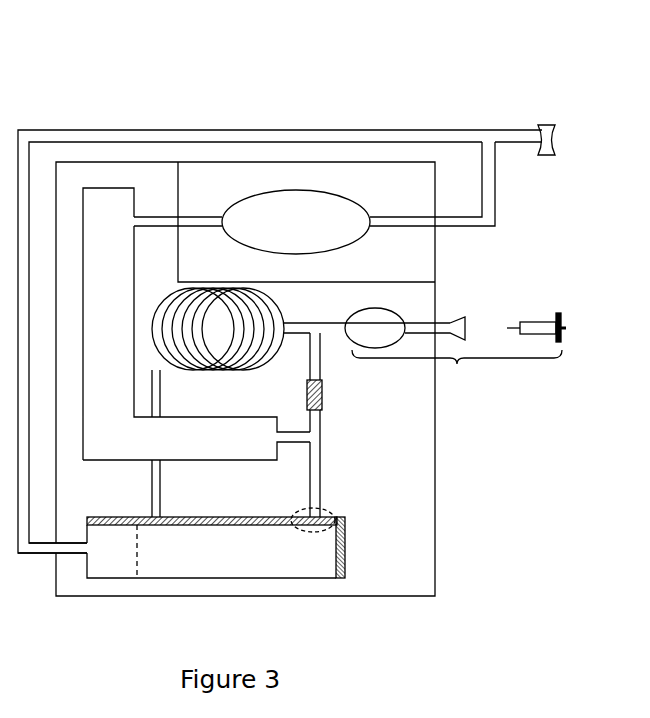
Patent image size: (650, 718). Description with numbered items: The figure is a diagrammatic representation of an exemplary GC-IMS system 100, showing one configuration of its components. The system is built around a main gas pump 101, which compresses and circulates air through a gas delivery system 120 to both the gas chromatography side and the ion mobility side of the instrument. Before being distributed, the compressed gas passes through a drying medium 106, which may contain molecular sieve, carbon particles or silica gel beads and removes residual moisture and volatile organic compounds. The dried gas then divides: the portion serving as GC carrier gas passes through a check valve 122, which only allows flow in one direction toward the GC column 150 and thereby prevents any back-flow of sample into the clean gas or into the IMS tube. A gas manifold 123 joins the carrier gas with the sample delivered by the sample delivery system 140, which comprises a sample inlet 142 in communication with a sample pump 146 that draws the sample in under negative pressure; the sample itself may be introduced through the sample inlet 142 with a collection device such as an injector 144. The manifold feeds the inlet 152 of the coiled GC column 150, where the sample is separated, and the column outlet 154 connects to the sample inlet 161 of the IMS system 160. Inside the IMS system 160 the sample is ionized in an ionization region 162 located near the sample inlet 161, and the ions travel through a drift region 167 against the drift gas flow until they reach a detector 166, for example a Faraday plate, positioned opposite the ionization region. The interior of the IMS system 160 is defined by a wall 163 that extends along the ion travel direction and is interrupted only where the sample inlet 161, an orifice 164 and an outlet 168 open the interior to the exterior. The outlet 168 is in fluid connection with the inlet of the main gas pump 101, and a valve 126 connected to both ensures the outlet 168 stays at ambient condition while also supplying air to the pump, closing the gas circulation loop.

The GC-IMS system 100 is at (580, 58).
The main gas pump 101 is at (314, 226).
The drying medium 106 is at (124, 322).
The gas delivery system 120 is at (321, 458).
The check valve 122 is at (305, 392).
The gas manifold 123 is at (323, 338).
The valve 126 is at (536, 128).
The sample delivery system 140 is at (457, 373).
The sample inlet 142 is at (464, 313).
The injector 144 is at (531, 316).
The sample pump 146 is at (394, 338).
The GC column 150 is at (163, 297).
The inlet 152 is at (288, 323).
The outlet 154 is at (150, 338).
The IMS system 160 is at (120, 594).
The sample inlet 161 is at (166, 519).
The ionization region 162 is at (172, 564).
The wall 163 is at (84, 518).
The orifice 164 is at (336, 514).
The detector 166 is at (350, 530).
The drift region 167 is at (271, 560).
The outlet 168 is at (82, 564).